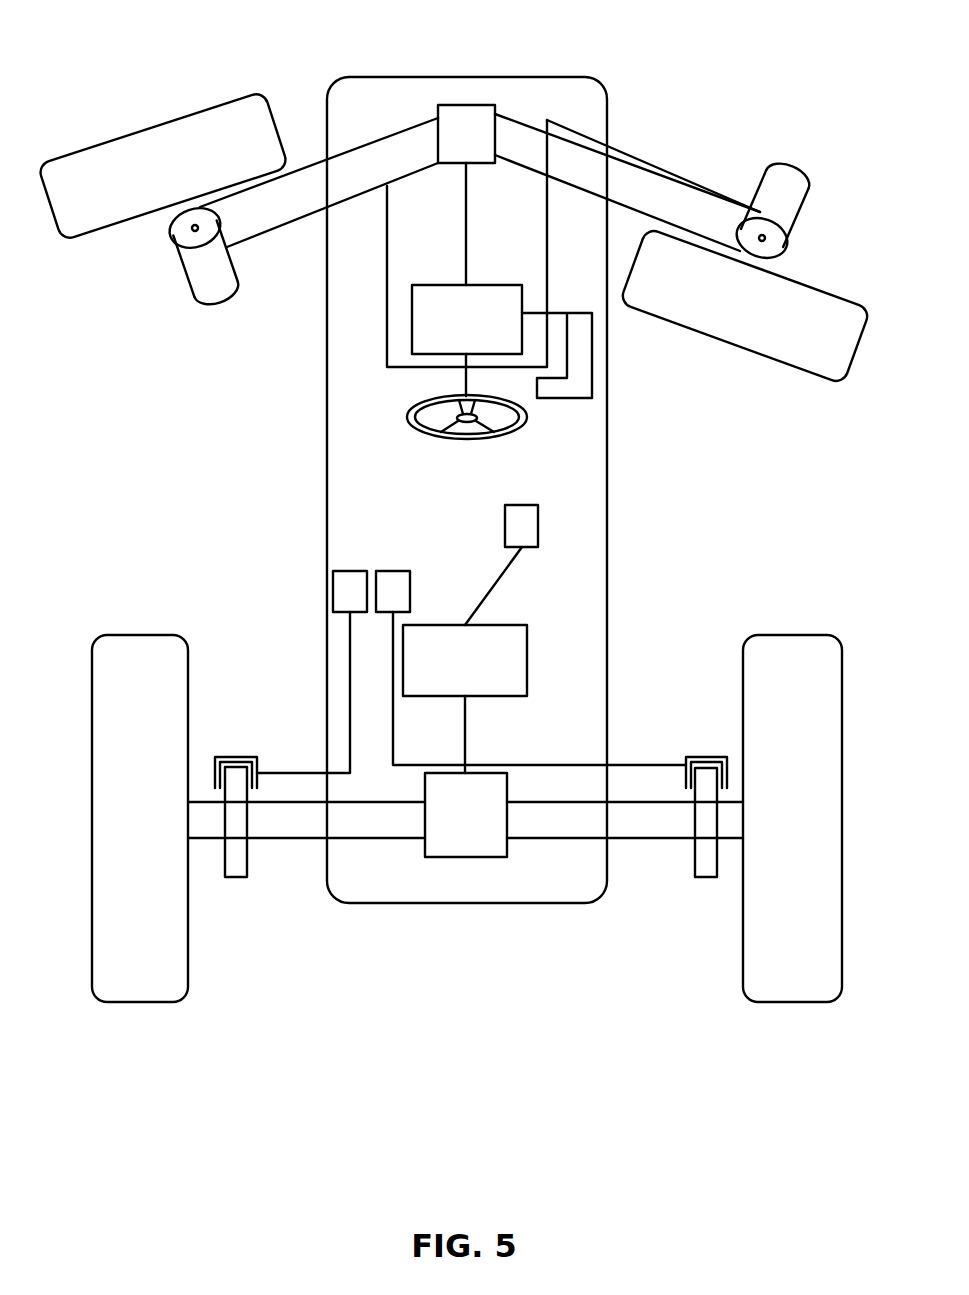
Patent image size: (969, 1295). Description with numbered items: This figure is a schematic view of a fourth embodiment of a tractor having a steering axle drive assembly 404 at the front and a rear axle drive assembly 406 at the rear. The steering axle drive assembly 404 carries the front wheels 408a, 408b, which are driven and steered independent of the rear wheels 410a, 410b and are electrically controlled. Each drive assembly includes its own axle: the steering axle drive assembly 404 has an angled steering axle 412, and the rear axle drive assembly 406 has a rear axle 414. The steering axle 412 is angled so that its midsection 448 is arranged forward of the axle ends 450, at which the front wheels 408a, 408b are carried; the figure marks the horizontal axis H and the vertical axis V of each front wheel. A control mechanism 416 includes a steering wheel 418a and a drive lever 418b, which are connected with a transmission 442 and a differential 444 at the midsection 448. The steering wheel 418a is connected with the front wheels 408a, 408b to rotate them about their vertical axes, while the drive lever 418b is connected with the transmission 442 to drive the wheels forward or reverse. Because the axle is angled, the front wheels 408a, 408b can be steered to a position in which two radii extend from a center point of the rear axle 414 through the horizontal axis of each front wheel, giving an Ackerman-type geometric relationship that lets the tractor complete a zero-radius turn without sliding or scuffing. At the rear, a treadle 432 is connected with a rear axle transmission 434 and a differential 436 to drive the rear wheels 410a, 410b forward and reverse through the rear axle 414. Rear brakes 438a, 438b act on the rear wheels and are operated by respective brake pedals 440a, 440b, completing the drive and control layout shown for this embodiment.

The steering axle drive assembly 404 is at (672, 68).
The rear axle drive assembly 406 is at (337, 983).
The front wheel 408a is at (110, 187).
The front wheel 408b is at (714, 329).
The rear wheel 410a is at (181, 847).
The rear wheel 410b is at (833, 847).
The steering axle 412 is at (348, 160).
The rear axle 414 is at (650, 823).
The control mechanism 416 is at (575, 435).
The steering wheel 418a is at (412, 417).
The drive lever 418b is at (587, 380).
The treadle 432 is at (527, 530).
The rear axle transmission 434 is at (433, 680).
The differential 436 is at (434, 828).
The rear brake 438a is at (237, 863).
The rear brake 438b is at (708, 860).
The brake pedal 440a is at (352, 587).
The brake pedal 440b is at (393, 603).
The transmission 442 is at (434, 338).
The differential 444 is at (463, 123).
The midsection 448 is at (507, 132).
The axle ends 450 is at (217, 208).
The horizontal axis H is at (147, 127).
The vertical axis V is at (193, 228).